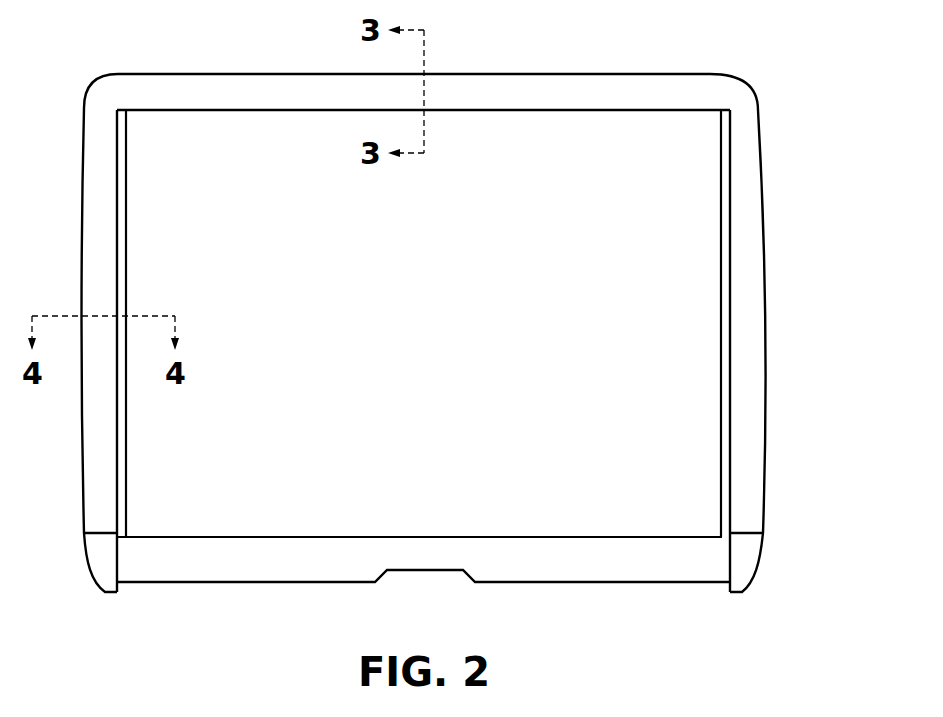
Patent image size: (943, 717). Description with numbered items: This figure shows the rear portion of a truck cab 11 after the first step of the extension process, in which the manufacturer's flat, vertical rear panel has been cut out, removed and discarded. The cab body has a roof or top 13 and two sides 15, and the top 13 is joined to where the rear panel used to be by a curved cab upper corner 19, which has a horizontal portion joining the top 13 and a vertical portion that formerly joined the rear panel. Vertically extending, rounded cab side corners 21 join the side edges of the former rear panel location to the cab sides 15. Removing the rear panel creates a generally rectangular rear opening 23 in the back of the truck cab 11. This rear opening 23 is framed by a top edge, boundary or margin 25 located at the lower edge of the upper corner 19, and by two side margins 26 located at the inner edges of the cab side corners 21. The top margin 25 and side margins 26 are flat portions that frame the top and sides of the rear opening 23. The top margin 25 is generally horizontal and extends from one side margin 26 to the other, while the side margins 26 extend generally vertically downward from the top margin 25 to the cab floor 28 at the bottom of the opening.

The truck cab 11 is at (443, 304).
The top 13 is at (650, 73).
The sides 15 is at (768, 343).
The cab upper corner 19 is at (212, 93).
The cab side corners 21 is at (93, 452).
The rear opening 23 is at (530, 423).
The top margin 25 is at (544, 112).
The side margins 26 is at (722, 423).
The cab floor 28 is at (245, 557).